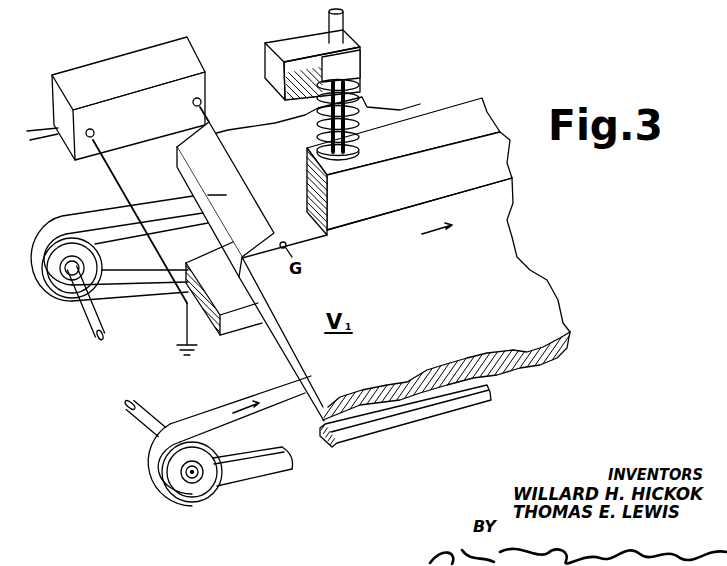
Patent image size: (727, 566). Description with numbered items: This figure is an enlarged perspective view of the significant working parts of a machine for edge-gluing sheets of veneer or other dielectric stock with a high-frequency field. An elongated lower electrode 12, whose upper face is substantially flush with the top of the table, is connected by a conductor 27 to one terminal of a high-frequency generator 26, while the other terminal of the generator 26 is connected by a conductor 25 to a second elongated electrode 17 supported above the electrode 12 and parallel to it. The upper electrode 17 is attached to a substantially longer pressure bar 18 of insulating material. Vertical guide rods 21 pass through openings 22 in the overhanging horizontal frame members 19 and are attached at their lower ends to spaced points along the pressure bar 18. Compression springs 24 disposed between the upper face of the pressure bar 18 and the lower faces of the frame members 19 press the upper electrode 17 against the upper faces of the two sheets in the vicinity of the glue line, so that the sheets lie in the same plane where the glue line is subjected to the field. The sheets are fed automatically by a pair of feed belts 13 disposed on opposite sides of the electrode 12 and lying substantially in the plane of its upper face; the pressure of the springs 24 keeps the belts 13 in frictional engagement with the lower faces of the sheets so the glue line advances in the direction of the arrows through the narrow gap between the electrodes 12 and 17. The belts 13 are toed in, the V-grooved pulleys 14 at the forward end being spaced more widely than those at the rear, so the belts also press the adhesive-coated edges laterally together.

The elongated electrode 12 is at (230, 337).
The feed belts 13 is at (113, 303).
The pulleys 14 is at (196, 489).
The second elongated electrode 17 is at (352, 235).
The pressure bar 18 is at (447, 122).
The horizontal frame members 19 is at (356, 68).
The vertical guide rods 21 is at (345, 27).
The openings 22 is at (360, 43).
The compression springs 24 is at (359, 90).
The conductor 25 is at (226, 150).
The high-frequency generator 26 is at (181, 43).
The conductor 27 is at (118, 193).